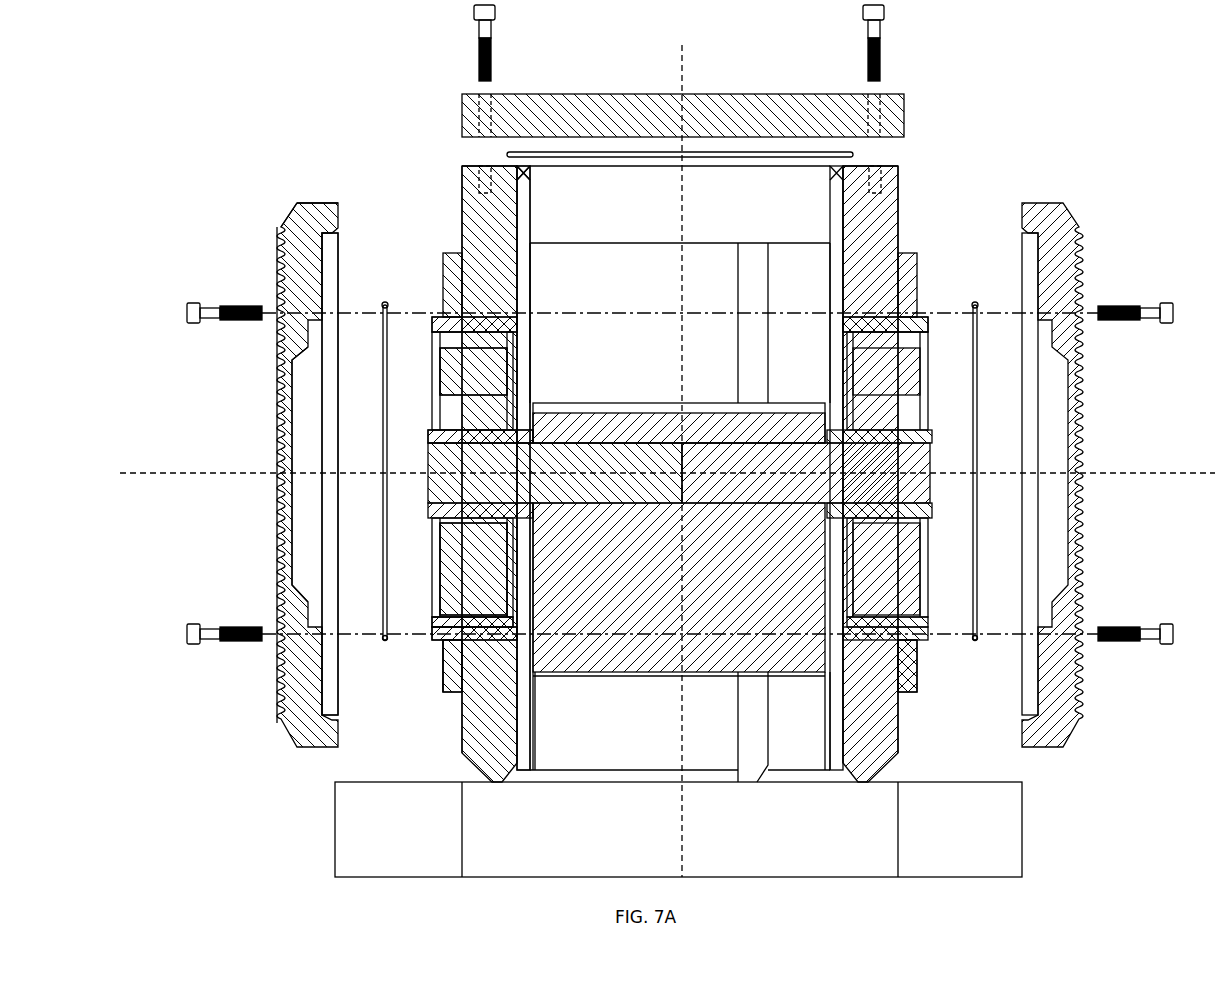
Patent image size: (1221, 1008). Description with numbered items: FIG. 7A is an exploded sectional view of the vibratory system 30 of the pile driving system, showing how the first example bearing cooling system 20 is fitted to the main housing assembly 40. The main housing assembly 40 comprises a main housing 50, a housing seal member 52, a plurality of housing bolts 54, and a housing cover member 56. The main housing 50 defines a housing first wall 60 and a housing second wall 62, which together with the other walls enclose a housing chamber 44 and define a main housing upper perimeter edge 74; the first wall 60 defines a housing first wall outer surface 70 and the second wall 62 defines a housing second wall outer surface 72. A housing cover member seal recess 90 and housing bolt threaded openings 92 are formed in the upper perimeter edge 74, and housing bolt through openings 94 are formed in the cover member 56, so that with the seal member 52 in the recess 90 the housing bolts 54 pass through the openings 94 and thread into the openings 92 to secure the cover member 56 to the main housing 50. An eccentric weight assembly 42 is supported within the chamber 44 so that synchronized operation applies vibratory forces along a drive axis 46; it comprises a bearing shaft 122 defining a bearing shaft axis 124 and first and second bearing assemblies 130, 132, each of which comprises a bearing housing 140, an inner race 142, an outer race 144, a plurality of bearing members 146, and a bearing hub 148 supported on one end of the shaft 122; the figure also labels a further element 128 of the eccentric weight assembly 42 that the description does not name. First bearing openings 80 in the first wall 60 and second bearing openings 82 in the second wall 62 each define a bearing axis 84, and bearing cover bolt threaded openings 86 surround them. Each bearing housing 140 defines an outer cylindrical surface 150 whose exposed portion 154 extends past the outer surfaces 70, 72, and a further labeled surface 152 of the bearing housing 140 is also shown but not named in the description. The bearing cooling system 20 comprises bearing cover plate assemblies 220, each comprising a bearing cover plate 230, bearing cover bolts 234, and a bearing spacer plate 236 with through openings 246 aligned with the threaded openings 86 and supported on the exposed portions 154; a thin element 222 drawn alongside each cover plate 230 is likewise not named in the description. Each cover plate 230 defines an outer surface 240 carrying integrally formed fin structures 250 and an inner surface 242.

The bearing cooling system 20 is at (266, 167).
The vibratory system 30 is at (385, 124).
The main housing assembly 40 is at (984, 130).
The eccentric weight assembly 42 is at (601, 395).
The housing chamber 44 is at (680, 204).
The drive axis 46 is at (684, 70).
The main housing 50 is at (905, 210).
The housing seal member 52 is at (563, 150).
The housing bolt 54 is at (475, 28).
The housing cover member 56 is at (787, 100).
The housing first wall 60 is at (465, 205).
The housing second wall 62 is at (898, 233).
The housing first wall outer surface 70 is at (462, 172).
The housing second wall outer surface 72 is at (898, 198).
The main housing upper perimeter edge 74 is at (895, 166).
The first bearing opening 80 is at (505, 343).
The second bearing opening 82 is at (845, 336).
The bearing axis 84 is at (230, 474).
The bearing cover bolt threaded opening 86 is at (918, 275).
The housing cover member seal recess 90 is at (532, 175).
The housing bolt threaded opening 92 is at (462, 166).
The housing bolt through opening 94 is at (905, 100).
The bearing shaft 122 is at (764, 500).
The bearing shaft axis 124 is at (679, 473).
The rotor block 128 is at (828, 665).
The first bearing assembly 130 is at (428, 298).
The second bearing assembly 132 is at (950, 300).
The bearing housing 140 is at (509, 590).
The inner race 142 is at (546, 590).
The outer race 144 is at (440, 578).
The bearing member 146 is at (470, 380).
The bearing hub 148 is at (450, 434).
The bearing housing outer cylindrical surface 150 is at (446, 662).
The lower bearing cap 152 is at (436, 622).
The exposed portion 154 is at (448, 636).
The bearing cover plate assembly 220 is at (1140, 120).
The pin 222 is at (384, 304).
The bearing cover plate 230 is at (302, 203).
The bearing cover bolt 234 is at (210, 316).
The bearing spacer plate 236 is at (450, 252).
The outer surface 240 is at (292, 365).
The inner surface 242 is at (338, 233).
The bearing spacer plate through opening 246 is at (532, 272).
The fin structure 250 is at (278, 428).